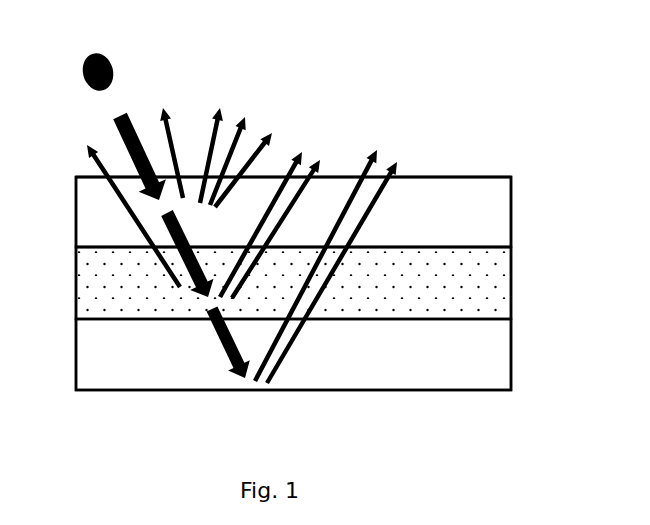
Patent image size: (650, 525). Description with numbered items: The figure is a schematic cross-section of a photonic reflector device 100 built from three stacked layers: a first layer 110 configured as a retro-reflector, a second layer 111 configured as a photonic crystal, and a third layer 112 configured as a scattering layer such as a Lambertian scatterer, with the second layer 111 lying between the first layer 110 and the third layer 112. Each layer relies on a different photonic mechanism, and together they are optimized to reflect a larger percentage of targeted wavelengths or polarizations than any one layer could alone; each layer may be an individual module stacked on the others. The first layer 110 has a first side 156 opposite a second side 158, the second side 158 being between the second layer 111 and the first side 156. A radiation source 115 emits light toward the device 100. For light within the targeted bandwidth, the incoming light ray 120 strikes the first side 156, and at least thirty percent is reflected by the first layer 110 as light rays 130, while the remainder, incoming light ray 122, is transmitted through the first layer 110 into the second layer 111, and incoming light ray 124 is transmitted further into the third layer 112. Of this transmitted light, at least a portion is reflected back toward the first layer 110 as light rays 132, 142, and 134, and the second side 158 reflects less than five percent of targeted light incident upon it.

The photonic reflector device 100 is at (494, 134).
The first layer 110 is at (490, 224).
The second layer 111 is at (489, 298).
The third layer 112 is at (490, 374).
The radiation source 115 is at (115, 65).
The incoming light ray 120 is at (103, 125).
The incoming light ray 122 is at (198, 298).
The incoming light ray 124 is at (228, 365).
The reflected light rays 130 is at (273, 97).
The reflected light ray 132 is at (332, 148).
The reflected light ray 134 is at (408, 148).
The reflected light ray 142 is at (88, 165).
The first side 156 is at (452, 177).
The second side 158 is at (443, 246).